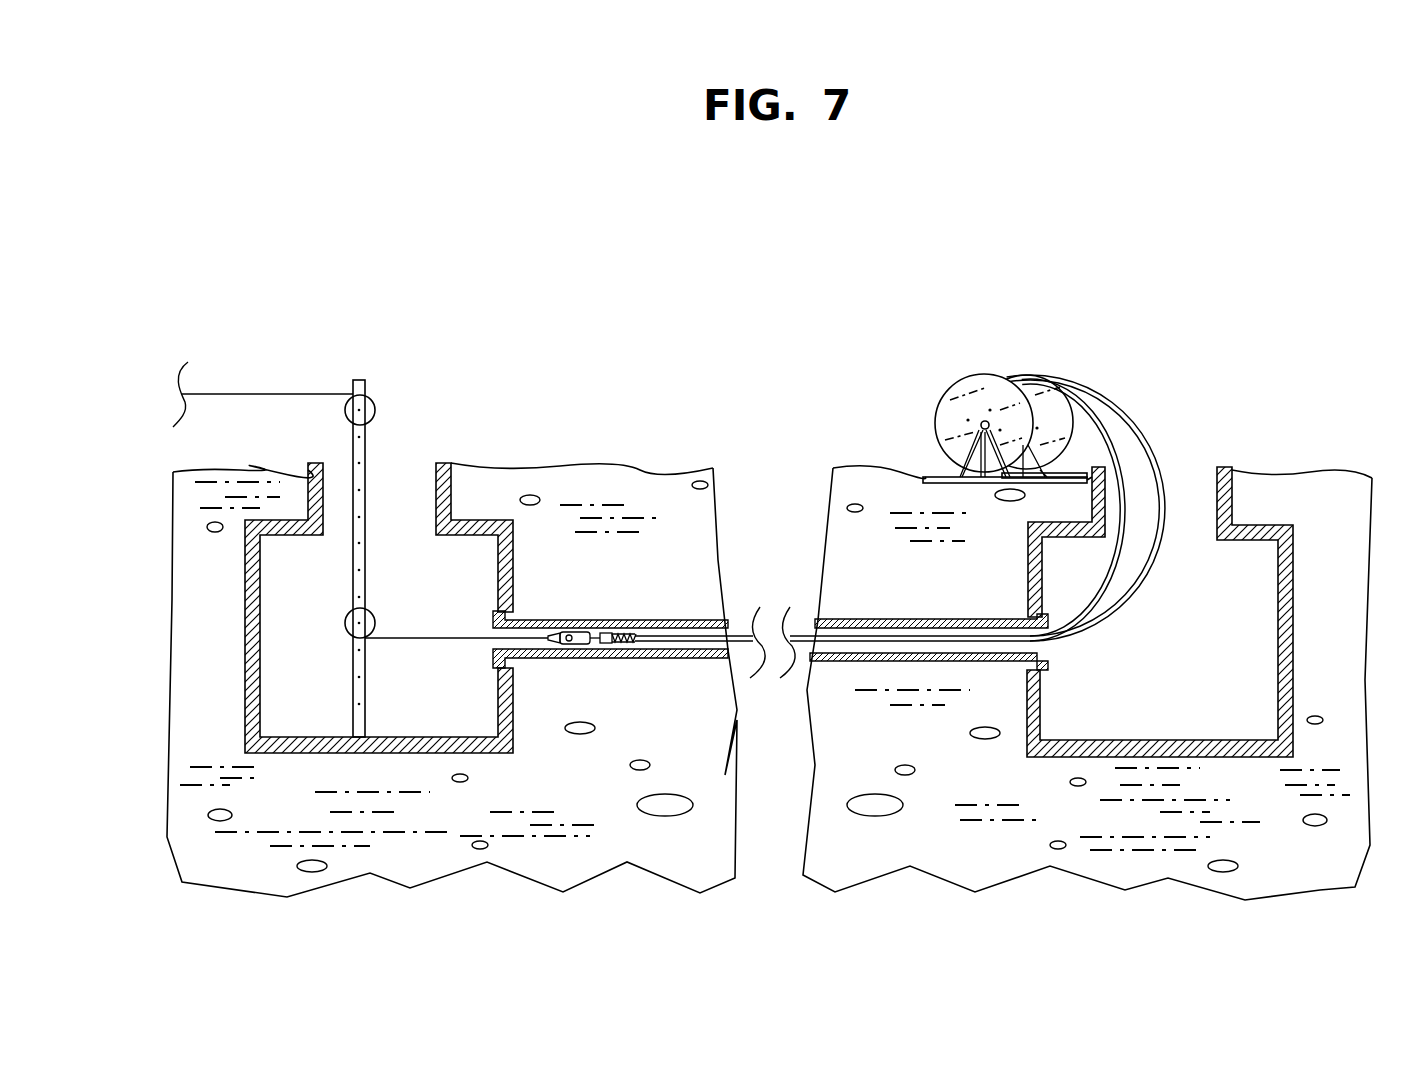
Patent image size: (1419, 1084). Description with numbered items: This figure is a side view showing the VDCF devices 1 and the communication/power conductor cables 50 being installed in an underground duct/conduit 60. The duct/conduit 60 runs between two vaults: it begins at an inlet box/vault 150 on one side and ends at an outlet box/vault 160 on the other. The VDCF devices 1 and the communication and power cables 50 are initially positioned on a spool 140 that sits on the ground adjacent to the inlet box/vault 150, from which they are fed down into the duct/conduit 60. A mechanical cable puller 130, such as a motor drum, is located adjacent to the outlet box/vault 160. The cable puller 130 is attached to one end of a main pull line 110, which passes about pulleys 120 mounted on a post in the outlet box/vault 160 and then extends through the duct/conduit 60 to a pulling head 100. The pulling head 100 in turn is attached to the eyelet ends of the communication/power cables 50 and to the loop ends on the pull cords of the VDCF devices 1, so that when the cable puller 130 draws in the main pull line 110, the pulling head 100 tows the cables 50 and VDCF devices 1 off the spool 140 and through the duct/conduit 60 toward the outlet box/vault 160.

The VDCF device 1 is at (1088, 388).
The communication/power conductor cable 50 is at (1113, 448).
The duct/conduit 60 is at (942, 619).
The pulling head 100 is at (577, 633).
The main pull line 110 is at (444, 637).
The pulley 120 is at (375, 402).
The mechanical cable puller 130 is at (232, 394).
The spool 140 is at (953, 408).
The inlet box/vault 150 is at (1218, 500).
The outlet box/vault 160 is at (436, 494).